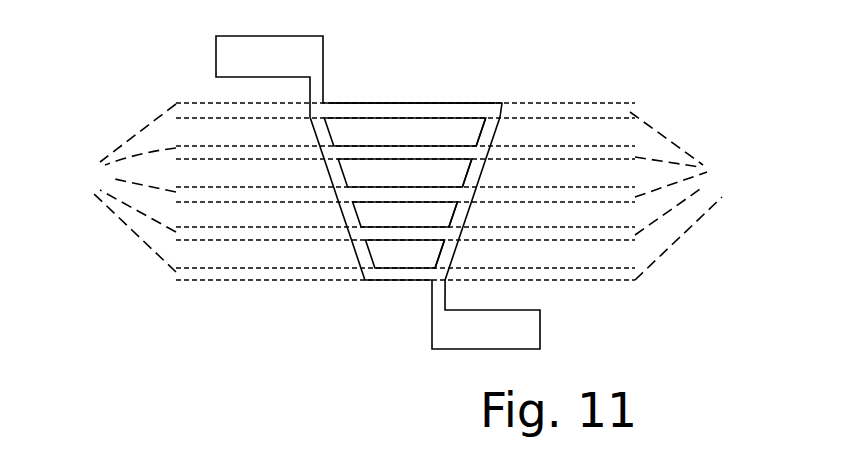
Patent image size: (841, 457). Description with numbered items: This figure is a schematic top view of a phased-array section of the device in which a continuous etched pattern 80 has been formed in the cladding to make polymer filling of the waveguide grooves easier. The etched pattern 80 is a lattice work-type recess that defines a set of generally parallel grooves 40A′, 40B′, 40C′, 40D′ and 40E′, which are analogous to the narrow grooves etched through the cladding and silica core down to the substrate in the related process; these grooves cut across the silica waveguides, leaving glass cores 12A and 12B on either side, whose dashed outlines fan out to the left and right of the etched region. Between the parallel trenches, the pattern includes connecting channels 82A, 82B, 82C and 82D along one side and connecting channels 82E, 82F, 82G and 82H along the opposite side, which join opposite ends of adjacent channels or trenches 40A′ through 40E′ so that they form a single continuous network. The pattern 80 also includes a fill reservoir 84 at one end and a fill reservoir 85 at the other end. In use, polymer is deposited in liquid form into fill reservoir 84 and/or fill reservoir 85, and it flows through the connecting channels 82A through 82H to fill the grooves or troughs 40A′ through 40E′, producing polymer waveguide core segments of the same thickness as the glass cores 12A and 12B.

The glass core 12A is at (116, 188).
The glass core 12B is at (694, 196).
The etched pattern 80 is at (325, 62).
The fill reservoir 84 is at (237, 55).
The fill reservoir 85 is at (517, 337).
The groove 40A′ is at (443, 112).
The groove 40B′ is at (453, 155).
The groove 40C′ is at (368, 193).
The groove 40D′ is at (385, 236).
The groove 40E′ is at (398, 273).
The connecting channel 82A is at (327, 128).
The connecting channel 82B is at (341, 174).
The connecting channel 82C is at (354, 212).
The connecting channel 82D is at (366, 253).
The connecting channel 82E is at (489, 124).
The connecting channel 82F is at (466, 179).
The connecting channel 82G is at (454, 217).
The connecting channel 82H is at (441, 257).